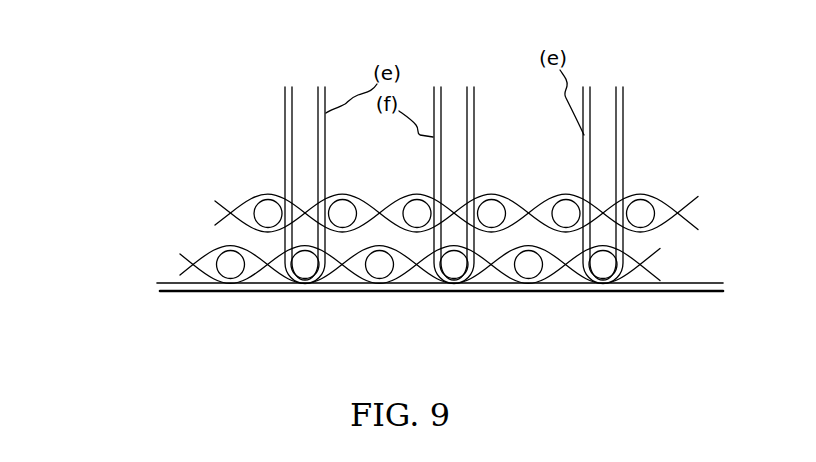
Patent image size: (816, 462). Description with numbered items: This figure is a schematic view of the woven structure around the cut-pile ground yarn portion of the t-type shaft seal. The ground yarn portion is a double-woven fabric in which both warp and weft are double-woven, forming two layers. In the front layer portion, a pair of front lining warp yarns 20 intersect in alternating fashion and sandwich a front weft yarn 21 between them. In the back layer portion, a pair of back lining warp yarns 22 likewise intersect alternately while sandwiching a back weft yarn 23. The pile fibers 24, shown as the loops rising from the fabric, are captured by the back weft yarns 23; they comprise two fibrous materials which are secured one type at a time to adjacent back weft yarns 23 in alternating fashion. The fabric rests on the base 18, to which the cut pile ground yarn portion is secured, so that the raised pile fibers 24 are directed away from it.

The base layer 18 is at (273, 292).
The first yarns (a),(b) of upper woven layer 20 is at (221, 200).
The weft yarns of upper woven layer 21 is at (344, 206).
The second yarns (c),(d) of lower woven layer 22 is at (184, 256).
The weft yarns of lower woven layer 23 is at (381, 270).
The pile fibers 24 is at (284, 155).